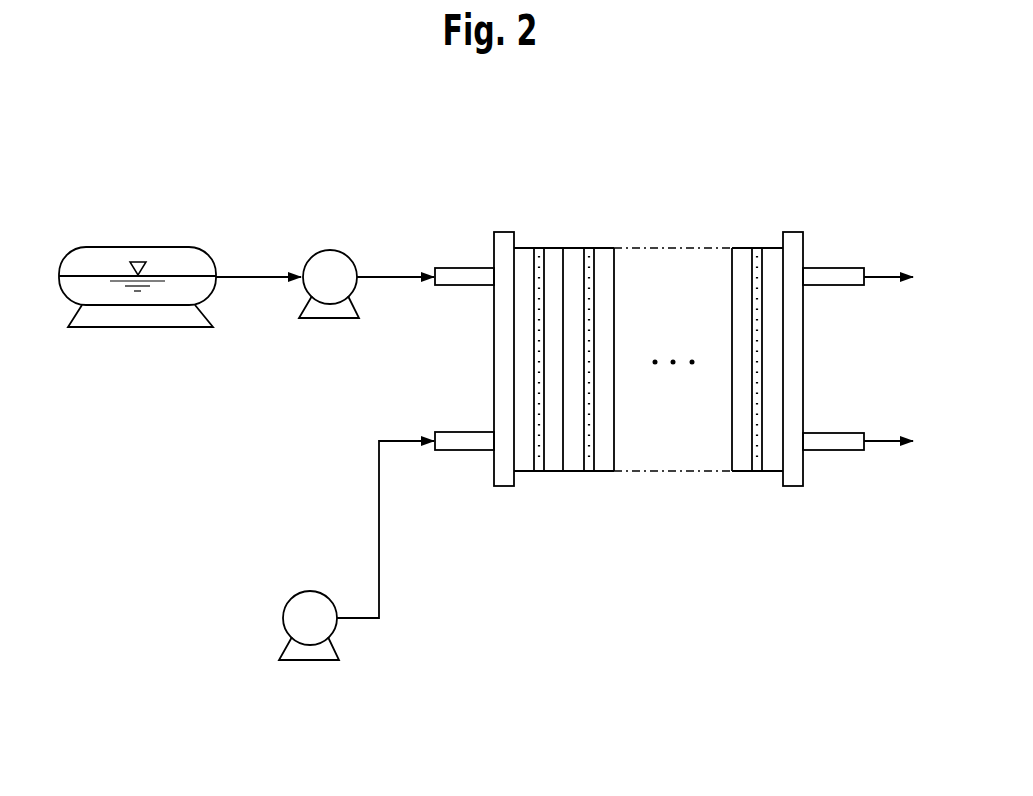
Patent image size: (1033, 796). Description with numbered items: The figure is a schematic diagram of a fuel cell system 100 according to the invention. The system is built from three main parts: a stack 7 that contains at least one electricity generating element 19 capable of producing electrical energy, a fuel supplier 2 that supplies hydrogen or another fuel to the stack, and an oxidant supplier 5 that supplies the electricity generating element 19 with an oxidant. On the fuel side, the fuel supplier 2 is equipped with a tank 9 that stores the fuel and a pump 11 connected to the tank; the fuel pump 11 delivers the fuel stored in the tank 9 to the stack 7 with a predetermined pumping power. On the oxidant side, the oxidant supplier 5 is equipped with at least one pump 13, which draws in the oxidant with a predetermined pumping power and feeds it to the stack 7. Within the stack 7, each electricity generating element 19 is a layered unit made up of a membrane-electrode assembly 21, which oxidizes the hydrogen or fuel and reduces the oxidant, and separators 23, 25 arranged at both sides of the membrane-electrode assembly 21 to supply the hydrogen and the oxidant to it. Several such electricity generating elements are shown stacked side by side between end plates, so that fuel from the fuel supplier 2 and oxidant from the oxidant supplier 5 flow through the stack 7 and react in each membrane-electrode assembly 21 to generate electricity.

The fuel cell system 100 is at (462, 144).
The fuel supplier 2 is at (173, 375).
The tank 9 is at (165, 247).
The pump 11 is at (330, 250).
The oxidant supplier 5 is at (258, 607).
The pump 13 is at (283, 625).
The stack 7 is at (857, 336).
The electricity generating element 19 is at (622, 567).
The membrane-electrode assembly 21 is at (590, 465).
The separator 23 is at (574, 465).
The separator 25 is at (602, 465).